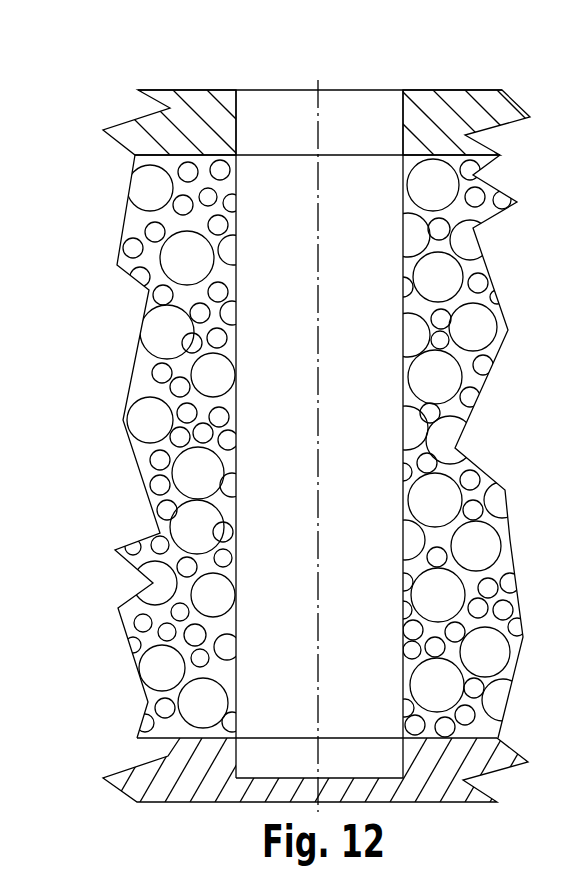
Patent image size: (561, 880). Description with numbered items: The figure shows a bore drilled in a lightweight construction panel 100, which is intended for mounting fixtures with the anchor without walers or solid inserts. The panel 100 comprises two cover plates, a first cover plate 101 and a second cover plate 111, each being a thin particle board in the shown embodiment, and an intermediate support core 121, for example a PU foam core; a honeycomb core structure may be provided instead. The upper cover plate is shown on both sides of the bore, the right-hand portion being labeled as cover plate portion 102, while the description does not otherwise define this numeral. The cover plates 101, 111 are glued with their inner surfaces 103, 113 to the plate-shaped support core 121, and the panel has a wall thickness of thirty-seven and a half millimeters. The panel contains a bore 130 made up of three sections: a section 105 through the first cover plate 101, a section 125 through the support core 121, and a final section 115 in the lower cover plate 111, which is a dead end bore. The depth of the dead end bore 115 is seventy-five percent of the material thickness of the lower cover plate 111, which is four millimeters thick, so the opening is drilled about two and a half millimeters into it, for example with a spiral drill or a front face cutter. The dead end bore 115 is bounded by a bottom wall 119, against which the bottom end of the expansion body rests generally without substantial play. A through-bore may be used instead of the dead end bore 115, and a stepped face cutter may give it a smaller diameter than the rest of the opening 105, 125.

The lightweight construction panel 100 is at (209, 80).
The first cover plate 101 is at (158, 128).
The formation 102 is at (419, 88).
The inner surface of first cover plate 103 is at (160, 155).
The bore section 105 is at (239, 125).
The bore 130 is at (355, 80).
The support core 121 is at (173, 502).
The bore section 125 is at (236, 592).
The bottom wall 119 is at (207, 710).
The inner surface of second cover plate 113 is at (175, 738).
The second cover plate 111 is at (165, 746).
The dead end bore 115 is at (236, 767).